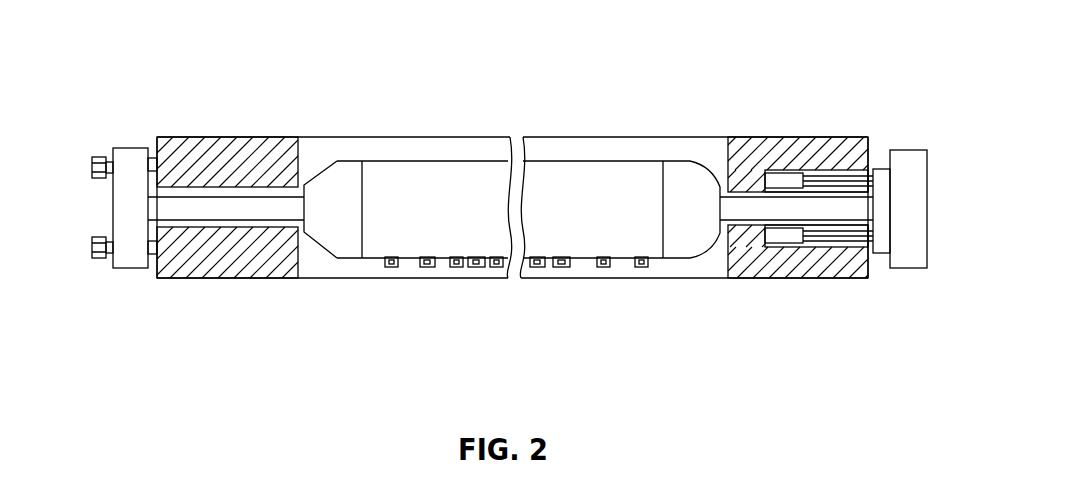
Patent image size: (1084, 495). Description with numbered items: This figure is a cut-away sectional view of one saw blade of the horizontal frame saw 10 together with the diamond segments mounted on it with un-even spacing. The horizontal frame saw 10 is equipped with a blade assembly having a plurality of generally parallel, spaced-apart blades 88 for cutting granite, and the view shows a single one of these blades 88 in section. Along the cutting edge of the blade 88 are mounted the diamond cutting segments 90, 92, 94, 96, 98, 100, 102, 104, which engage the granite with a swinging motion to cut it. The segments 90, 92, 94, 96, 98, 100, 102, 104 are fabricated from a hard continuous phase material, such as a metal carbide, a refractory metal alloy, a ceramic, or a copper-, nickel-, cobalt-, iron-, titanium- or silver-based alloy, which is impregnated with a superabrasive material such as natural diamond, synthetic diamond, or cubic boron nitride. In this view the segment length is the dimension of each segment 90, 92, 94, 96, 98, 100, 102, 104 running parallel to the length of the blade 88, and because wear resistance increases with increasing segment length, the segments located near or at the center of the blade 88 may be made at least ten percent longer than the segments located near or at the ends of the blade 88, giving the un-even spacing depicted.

The horizontal frame saw 10 is at (620, 105).
The blade 88 is at (512, 209).
The diamond cutting segment 90 is at (391, 267).
The diamond cutting segment 92 is at (429, 267).
The diamond cutting segment 94 is at (456, 267).
The diamond cutting segment 96 is at (497, 267).
The diamond cutting segment 98 is at (544, 267).
The diamond cutting segment 100 is at (563, 267).
The diamond cutting segment 102 is at (603, 267).
The diamond cutting segment 104 is at (642, 267).